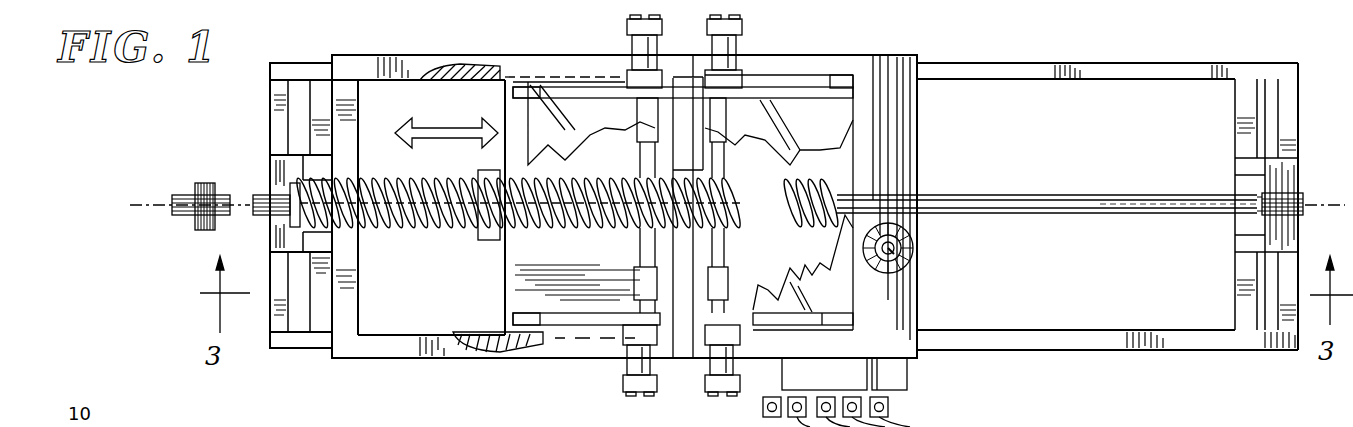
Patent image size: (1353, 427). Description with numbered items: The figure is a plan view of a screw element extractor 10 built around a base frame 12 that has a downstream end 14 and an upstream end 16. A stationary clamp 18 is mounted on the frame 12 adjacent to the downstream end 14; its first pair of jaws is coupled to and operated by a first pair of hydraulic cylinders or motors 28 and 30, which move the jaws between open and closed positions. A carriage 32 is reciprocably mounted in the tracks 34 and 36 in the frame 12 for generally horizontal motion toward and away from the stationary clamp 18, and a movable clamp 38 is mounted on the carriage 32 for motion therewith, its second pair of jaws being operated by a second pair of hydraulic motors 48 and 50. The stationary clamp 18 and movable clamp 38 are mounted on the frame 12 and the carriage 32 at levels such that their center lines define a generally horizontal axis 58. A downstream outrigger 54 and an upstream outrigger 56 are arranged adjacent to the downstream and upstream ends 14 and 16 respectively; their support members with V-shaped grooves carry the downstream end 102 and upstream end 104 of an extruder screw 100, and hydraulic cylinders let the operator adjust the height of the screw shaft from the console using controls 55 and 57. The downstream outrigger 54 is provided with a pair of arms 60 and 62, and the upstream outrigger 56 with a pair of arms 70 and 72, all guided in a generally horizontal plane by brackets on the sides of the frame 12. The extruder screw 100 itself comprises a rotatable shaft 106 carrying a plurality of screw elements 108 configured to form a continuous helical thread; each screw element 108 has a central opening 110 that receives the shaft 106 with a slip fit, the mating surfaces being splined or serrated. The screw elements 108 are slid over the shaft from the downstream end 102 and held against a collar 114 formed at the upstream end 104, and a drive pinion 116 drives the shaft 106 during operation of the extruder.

The screw element extractor 10 is at (936, 59).
The base frame 12 is at (366, 58).
The downstream end 14 is at (915, 108).
The upstream end 16 is at (332, 108).
The stationary clamp 18 is at (738, 168).
The hydraulic motor 28 is at (706, 383).
The hydraulic motor 30 is at (742, 27).
The carriage 32 is at (505, 290).
The track 34 is at (475, 330).
The track 36 is at (470, 78).
The movable clamp 38 is at (637, 181).
The hydraulic motor 48 is at (622, 383).
The hydraulic motor 50 is at (628, 30).
The downstream outrigger 54 is at (1285, 117).
The control 55 is at (893, 407).
The upstream outrigger 56 is at (272, 92).
The control 57 is at (775, 403).
The horizontal axis 58 is at (158, 203).
The arm 60 is at (1215, 345).
The arm 62 is at (1108, 62).
The arm 70 is at (315, 348).
The arm 72 is at (313, 63).
The extruder screw 100 is at (1002, 189).
The downstream end 102 is at (1300, 196).
The upstream end 104 is at (187, 194).
The shaft 106 is at (1170, 215).
The screw elements 108 is at (833, 182).
The central opening 110 is at (896, 252).
The collar 114 is at (296, 215).
The drive pinion 116 is at (203, 230).